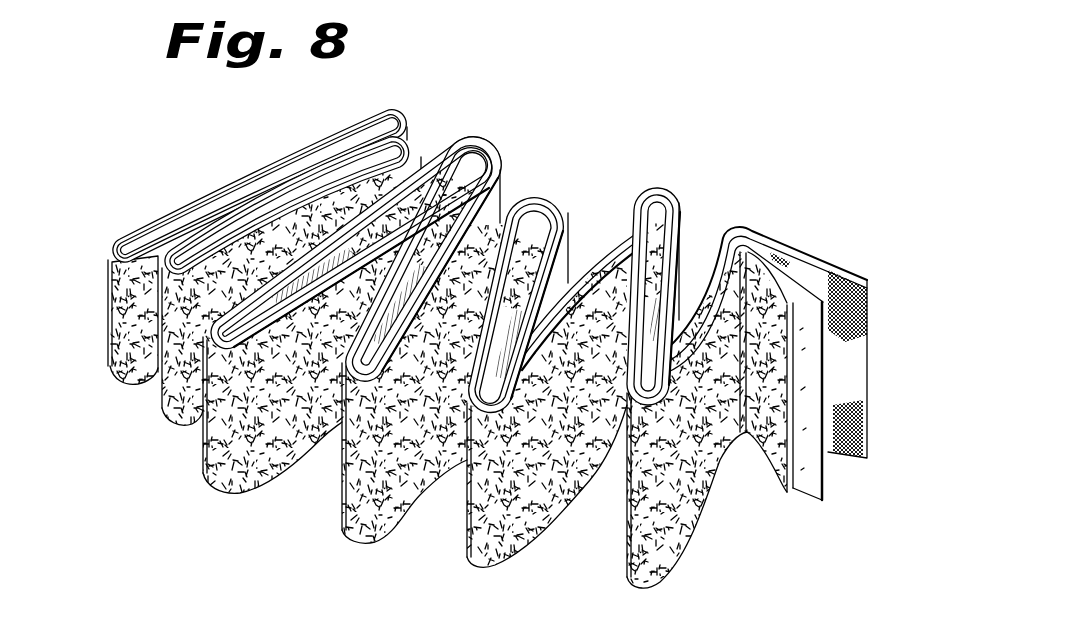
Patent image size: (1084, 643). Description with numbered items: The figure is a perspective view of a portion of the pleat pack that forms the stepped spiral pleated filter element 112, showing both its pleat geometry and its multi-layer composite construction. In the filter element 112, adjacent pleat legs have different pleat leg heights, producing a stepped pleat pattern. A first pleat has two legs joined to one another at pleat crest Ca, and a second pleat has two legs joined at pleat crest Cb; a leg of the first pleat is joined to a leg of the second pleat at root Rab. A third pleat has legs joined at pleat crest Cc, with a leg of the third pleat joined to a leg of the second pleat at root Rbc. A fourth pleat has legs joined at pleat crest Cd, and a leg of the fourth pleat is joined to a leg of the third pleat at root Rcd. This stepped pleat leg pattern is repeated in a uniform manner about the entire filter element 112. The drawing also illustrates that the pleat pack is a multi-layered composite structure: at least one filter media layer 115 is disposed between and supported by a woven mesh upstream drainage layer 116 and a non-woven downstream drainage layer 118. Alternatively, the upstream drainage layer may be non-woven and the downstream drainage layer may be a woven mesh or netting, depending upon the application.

The pleat crest Ca is at (443, 118).
The pleat crest Cb is at (503, 160).
The pleat crest Cc is at (566, 205).
The pleat crest Cd is at (670, 185).
The root Rab is at (205, 448).
The root Rbc is at (347, 503).
The root Rcd is at (465, 537).
The filter element 112 is at (777, 187).
The filter media layer 115 is at (810, 487).
The woven mesh upstream drainage layer 116 is at (843, 458).
The non-woven downstream drainage layer 118 is at (783, 468).